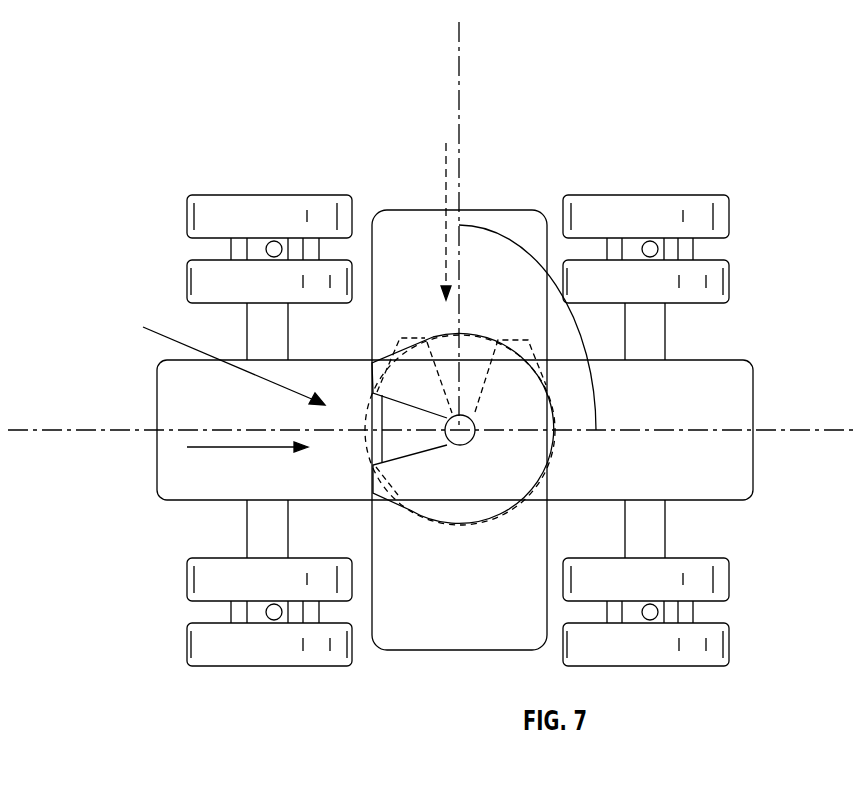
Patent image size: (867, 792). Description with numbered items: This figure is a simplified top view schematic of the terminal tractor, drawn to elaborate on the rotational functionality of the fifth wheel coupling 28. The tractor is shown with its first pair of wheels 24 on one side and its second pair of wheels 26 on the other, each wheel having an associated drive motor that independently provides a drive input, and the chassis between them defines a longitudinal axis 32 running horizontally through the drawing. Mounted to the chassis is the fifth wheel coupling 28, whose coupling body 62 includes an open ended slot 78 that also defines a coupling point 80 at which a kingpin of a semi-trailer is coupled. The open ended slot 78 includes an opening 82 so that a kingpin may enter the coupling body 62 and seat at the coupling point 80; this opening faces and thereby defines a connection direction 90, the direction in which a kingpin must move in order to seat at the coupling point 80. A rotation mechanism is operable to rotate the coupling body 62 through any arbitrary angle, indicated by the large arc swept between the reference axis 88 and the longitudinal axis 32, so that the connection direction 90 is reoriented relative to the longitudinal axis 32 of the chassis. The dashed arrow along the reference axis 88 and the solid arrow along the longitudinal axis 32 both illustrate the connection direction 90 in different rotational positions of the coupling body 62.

The first pair of wheels 24 is at (228, 195).
The second pair of wheels 26 is at (730, 220).
The fifth wheel coupling 28 is at (555, 448).
The longitudinal axis 32 is at (32, 430).
The coupling body 62 is at (508, 342).
The open ended slot 78 is at (410, 456).
The coupling point 80 is at (475, 445).
The opening 82 is at (218, 360).
The reference axis 88 is at (460, 72).
The connection direction 90 is at (445, 170).